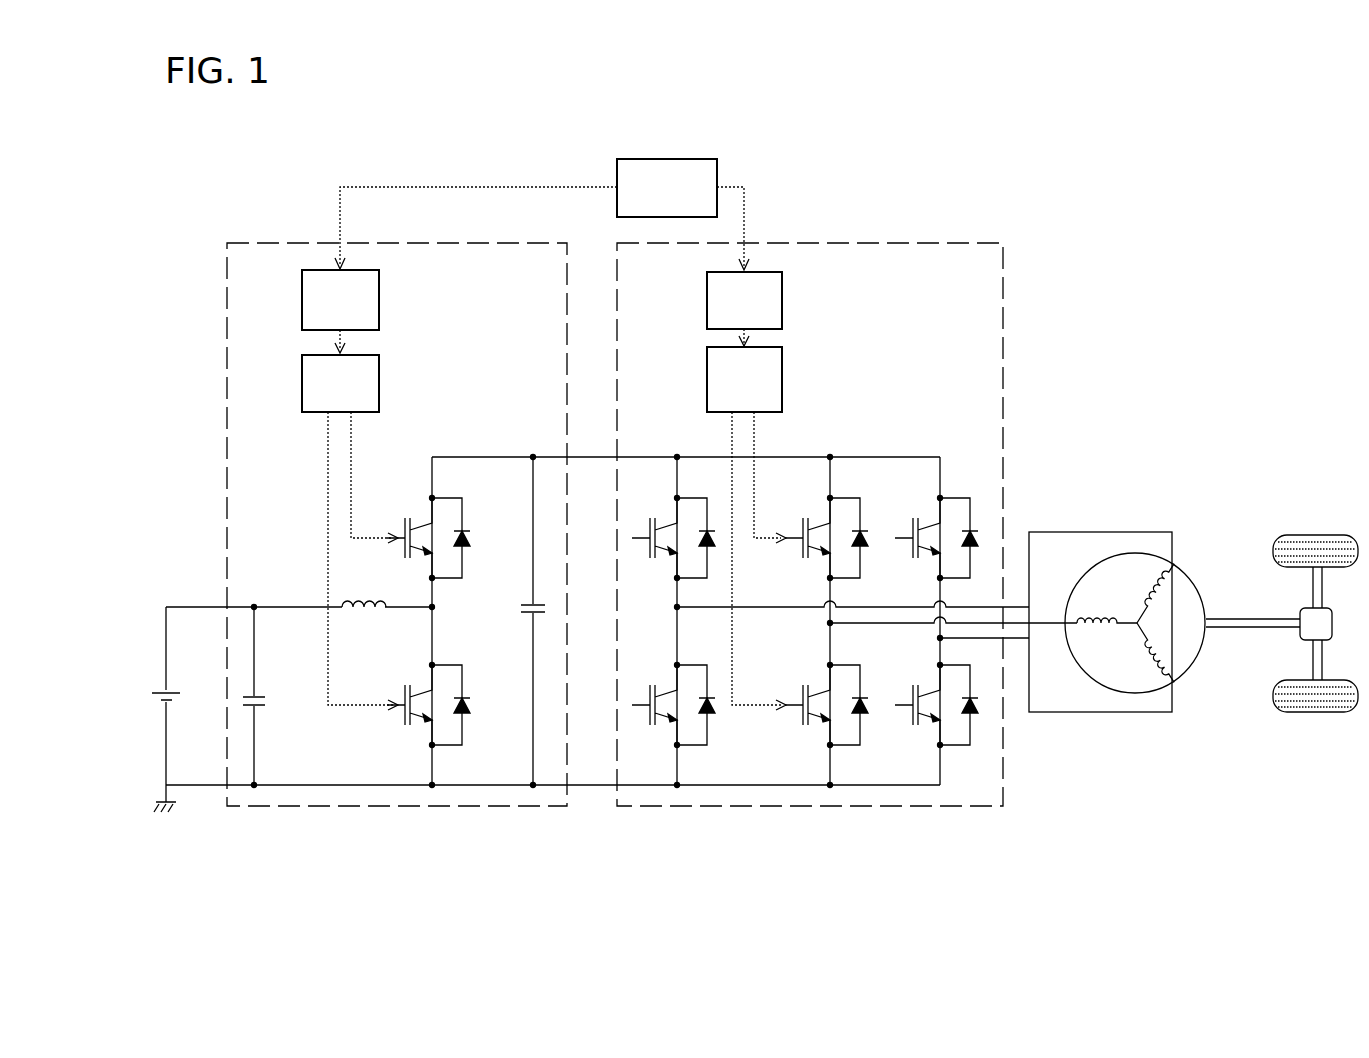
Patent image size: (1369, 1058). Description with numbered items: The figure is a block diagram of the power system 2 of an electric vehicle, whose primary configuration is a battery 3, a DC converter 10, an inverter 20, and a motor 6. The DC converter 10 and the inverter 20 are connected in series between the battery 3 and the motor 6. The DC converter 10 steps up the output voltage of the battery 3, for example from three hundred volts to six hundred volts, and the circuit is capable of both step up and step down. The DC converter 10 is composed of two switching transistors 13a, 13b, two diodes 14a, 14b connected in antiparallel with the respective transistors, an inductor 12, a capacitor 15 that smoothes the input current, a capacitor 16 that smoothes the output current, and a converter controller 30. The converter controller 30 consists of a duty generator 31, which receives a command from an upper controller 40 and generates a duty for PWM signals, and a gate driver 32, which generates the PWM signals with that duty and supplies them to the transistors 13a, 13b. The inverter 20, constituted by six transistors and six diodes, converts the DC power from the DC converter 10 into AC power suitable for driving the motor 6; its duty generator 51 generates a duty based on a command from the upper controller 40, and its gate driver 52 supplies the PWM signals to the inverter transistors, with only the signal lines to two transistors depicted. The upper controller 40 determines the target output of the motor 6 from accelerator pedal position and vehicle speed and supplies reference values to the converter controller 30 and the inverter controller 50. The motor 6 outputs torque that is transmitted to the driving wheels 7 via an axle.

The power system 2 is at (185, 177).
The battery 3 is at (162, 692).
The motor 6 is at (1203, 588).
The driving wheels 7 is at (1312, 535).
The DC converter 10 is at (447, 806).
The inductor 12 is at (361, 612).
The transistor 13a is at (398, 525).
The transistor 13b is at (403, 710).
The diode 14a is at (465, 523).
The diode 14b is at (463, 692).
The capacitor 15 is at (256, 696).
The capacitor 16 is at (530, 604).
The inverter 20 is at (962, 806).
The converter controller 30 is at (257, 490).
The duty generator 31 is at (302, 298).
The gate driver 32 is at (302, 383).
The upper controller 40 is at (683, 157).
The inverter controller 50 is at (910, 491).
The duty generator 51 is at (782, 299).
The gate driver 52 is at (782, 385).